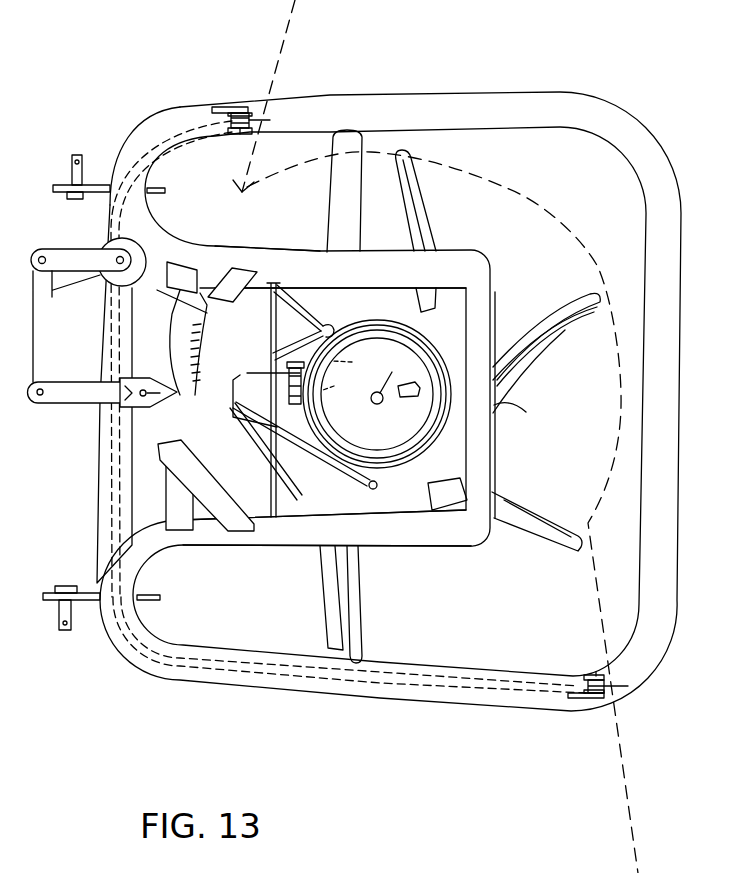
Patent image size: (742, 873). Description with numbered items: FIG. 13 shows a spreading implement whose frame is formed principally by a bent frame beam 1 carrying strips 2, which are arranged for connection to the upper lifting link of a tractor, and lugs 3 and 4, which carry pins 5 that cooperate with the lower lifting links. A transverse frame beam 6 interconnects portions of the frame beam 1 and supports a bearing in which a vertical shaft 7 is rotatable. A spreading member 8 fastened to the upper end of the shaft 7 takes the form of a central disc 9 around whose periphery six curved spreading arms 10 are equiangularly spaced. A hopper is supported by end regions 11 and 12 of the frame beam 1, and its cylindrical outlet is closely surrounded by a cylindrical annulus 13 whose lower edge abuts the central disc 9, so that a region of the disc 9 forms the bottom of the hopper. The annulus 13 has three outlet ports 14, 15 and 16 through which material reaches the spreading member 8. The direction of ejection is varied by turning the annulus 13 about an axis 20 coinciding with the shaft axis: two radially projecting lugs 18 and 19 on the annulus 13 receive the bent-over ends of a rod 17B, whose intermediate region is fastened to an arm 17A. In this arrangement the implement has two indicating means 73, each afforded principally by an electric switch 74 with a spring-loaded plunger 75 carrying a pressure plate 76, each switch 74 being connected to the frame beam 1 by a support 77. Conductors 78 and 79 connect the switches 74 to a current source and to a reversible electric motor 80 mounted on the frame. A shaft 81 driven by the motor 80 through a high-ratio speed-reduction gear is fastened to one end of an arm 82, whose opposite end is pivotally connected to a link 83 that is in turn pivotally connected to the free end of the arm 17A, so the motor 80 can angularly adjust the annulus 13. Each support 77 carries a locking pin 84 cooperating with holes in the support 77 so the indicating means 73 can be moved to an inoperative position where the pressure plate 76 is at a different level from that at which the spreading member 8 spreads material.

The frame beam 1 is at (468, 101).
The strips 2 is at (225, 298).
The lug 3 is at (92, 185).
The lug 4 is at (55, 593).
The pins 5 is at (68, 160).
The transverse frame beam 6 is at (333, 192).
The vertical shaft 7 is at (389, 371).
The spreading member 8 is at (545, 318).
The central disc 9 is at (500, 410).
The spreading arms 10 is at (420, 228).
The end region of frame beam 11 is at (452, 260).
The end region of frame beam 12 is at (440, 547).
The cylindrical annulus 13 is at (426, 354).
The outlet port 14 is at (356, 359).
The outlet port 15 is at (324, 383).
The outlet port 16 is at (338, 446).
The arm 17A is at (213, 397).
The rod 17B is at (283, 365).
The radially projecting lug 18 is at (334, 328).
The radially projecting lug 19 is at (382, 483).
The axis 20 is at (384, 402).
The indicating means 73 is at (218, 103).
The electric switch 74 is at (256, 119).
The spring-loaded plunger 75 is at (260, 131).
The pressure plate 76 is at (240, 135).
The support 77 is at (240, 107).
The conductor 78 is at (240, 656).
The conductor 79 is at (116, 140).
The reversible electric motor 80 is at (130, 252).
The shaft 81 is at (114, 256).
The arm 82 is at (51, 250).
The link 83 is at (52, 340).
The locking pin 84 is at (248, 108).